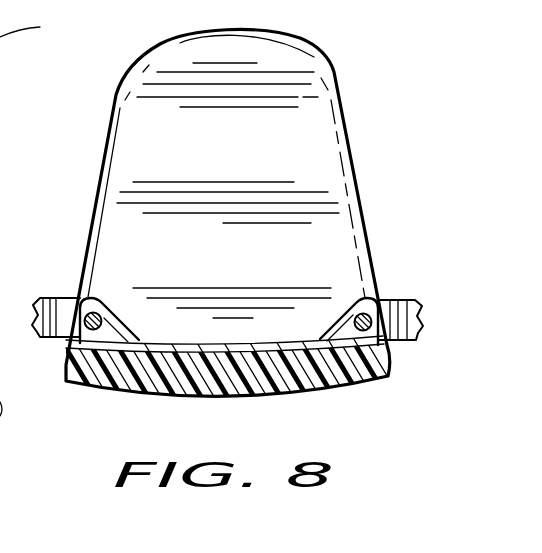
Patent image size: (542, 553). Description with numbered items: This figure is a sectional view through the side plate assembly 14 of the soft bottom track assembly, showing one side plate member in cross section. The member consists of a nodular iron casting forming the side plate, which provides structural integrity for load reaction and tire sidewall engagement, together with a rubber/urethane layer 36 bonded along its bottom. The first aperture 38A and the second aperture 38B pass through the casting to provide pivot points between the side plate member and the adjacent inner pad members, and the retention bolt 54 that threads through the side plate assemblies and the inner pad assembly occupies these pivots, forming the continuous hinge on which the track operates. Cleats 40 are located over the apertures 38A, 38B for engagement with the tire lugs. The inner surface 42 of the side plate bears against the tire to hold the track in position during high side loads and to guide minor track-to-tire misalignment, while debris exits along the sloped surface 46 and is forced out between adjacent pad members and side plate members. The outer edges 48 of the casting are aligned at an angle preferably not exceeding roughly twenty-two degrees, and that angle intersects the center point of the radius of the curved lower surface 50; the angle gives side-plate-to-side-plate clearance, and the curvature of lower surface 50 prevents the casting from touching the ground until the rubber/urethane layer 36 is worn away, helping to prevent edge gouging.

The side plate assembly 14 is at (335, 66).
The rubber/urethane layer 36 is at (152, 376).
The first aperture 38A is at (108, 310).
The second aperture 38B is at (371, 305).
The cleats 40 is at (88, 290).
The inner surface 42 is at (241, 153).
The sloped surface 46 is at (253, 330).
The outer edges 48 is at (112, 127).
The side plate lower surface 50 is at (236, 378).
The retention bolt 54 is at (86, 331).